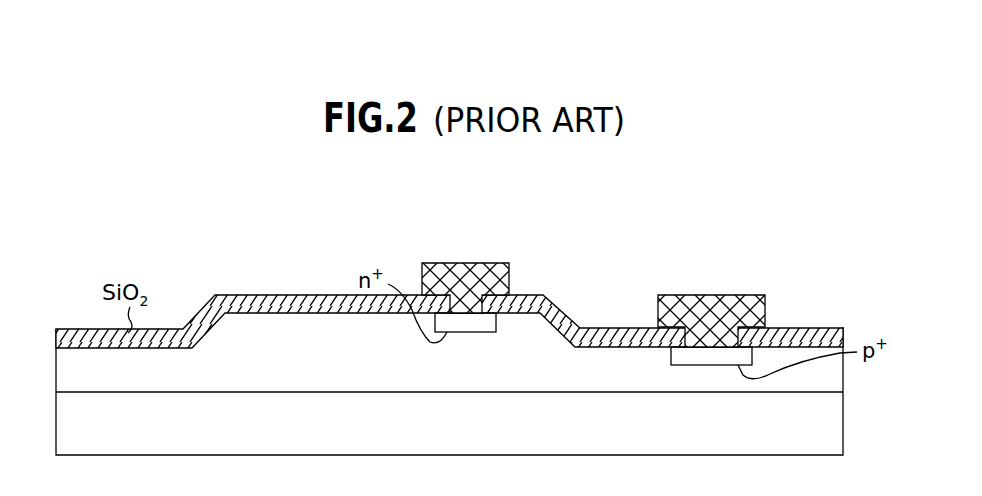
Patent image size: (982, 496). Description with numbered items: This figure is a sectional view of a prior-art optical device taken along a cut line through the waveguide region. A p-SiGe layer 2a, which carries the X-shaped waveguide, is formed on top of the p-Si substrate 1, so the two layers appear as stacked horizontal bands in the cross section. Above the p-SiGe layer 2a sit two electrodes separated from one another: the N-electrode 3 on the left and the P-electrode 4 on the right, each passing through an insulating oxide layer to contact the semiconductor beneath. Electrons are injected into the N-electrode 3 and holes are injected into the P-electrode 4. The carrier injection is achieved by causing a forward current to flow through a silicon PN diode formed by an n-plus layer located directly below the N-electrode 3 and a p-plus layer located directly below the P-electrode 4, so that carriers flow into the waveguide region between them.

The p-Si substrate 1 is at (449, 423).
The p-SiGe layer 2a is at (449, 359).
The N-electrode 3 is at (428, 262).
The P-electrode 4 is at (663, 295).